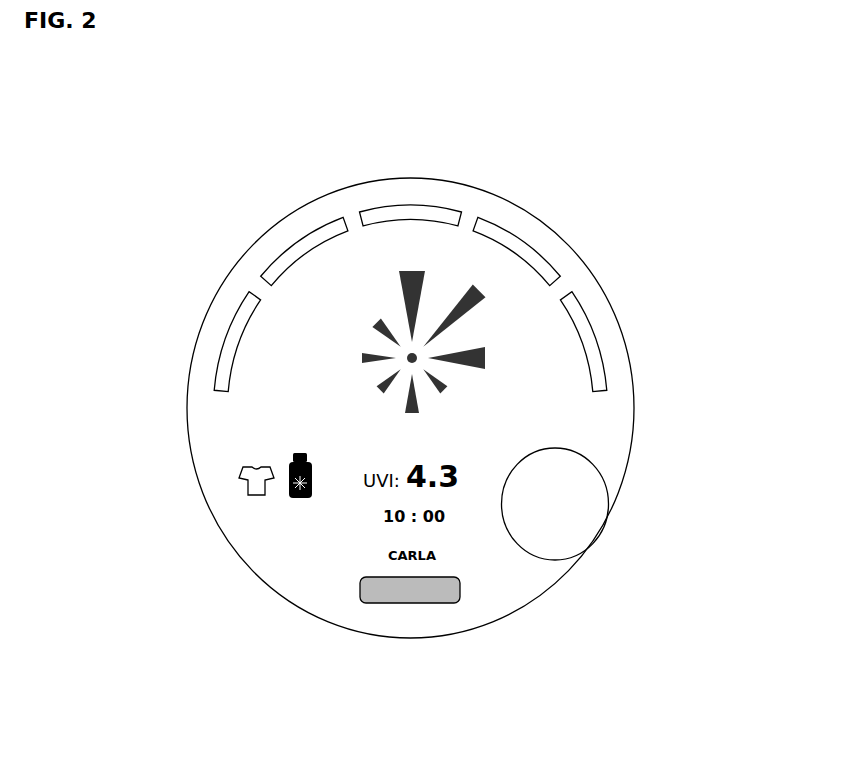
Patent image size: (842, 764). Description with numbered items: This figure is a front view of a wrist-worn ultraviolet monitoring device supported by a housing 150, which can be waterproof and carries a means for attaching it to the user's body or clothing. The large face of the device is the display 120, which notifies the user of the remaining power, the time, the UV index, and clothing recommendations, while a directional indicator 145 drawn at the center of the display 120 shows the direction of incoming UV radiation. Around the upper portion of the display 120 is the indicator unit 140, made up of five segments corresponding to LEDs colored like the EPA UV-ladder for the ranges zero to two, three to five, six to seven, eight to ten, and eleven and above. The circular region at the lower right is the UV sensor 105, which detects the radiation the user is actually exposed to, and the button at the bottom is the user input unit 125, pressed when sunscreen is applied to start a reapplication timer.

The UV sensor 105 is at (598, 532).
The display unit 120 is at (330, 488).
The user input unit 125 is at (413, 603).
The indicator unit 140 is at (412, 187).
The directional indicator 145 is at (455, 372).
The housing 150 is at (527, 607).